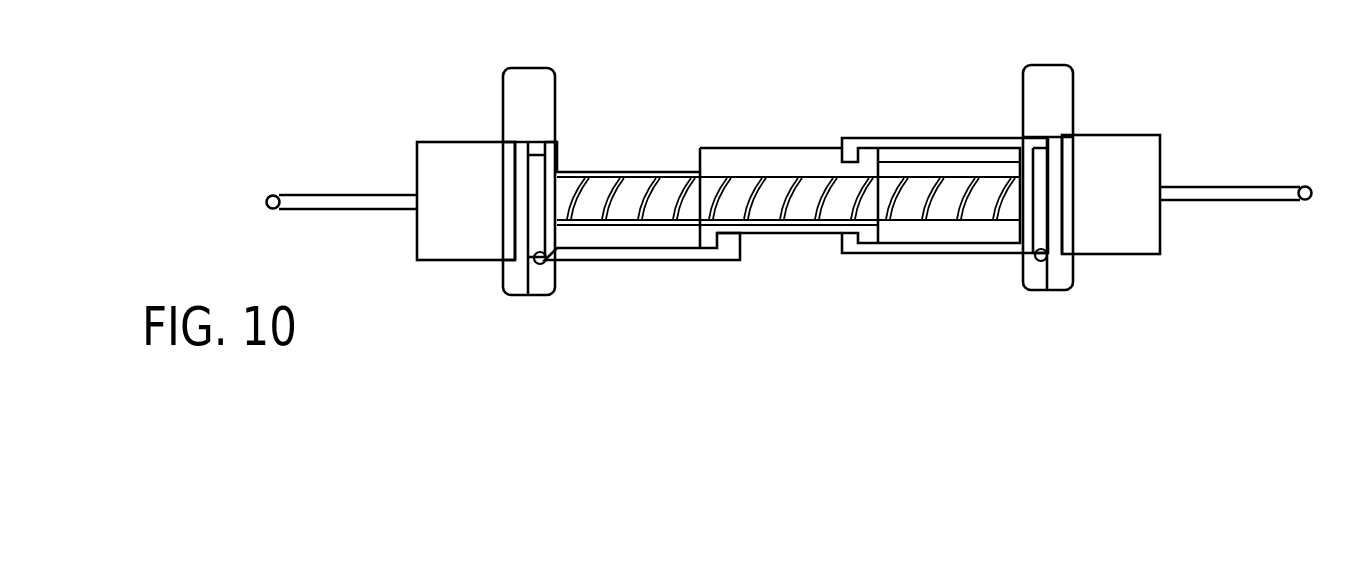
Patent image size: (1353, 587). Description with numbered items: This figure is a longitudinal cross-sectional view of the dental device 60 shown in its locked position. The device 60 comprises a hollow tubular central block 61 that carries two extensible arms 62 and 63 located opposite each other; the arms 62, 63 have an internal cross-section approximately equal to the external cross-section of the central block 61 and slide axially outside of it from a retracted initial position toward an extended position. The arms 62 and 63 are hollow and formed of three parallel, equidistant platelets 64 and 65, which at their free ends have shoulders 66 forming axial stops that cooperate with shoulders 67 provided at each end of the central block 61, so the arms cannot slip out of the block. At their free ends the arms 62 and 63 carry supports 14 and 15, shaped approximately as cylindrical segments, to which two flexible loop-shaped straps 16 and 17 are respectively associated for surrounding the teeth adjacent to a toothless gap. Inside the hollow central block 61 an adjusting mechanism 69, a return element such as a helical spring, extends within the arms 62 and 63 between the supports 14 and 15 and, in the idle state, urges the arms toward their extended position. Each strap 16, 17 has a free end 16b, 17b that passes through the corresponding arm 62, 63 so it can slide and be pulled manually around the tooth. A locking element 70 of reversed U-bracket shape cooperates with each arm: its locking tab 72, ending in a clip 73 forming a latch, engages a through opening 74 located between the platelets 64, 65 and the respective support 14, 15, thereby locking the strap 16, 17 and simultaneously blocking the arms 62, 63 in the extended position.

The support 14 is at (417, 154).
The support 15 is at (1132, 135).
The loop-shaped strap 16 is at (318, 197).
The free end of strap 16b is at (545, 255).
The loop-shaped strap 17 is at (1293, 187).
The free end of strap 17b is at (1045, 248).
The dental device 60 is at (796, 213).
The central block 61 is at (787, 243).
The extensible arm 62 is at (593, 273).
The extensible arm 63 is at (975, 268).
The platelet 64 is at (668, 262).
The platelet 65 is at (938, 260).
The shoulder 66 is at (868, 240).
The shoulder 67 is at (857, 238).
The adjusting mechanism 69 is at (605, 218).
The locking element 70 is at (518, 90).
The locking tab 72 is at (433, 242).
The clip 73 is at (520, 293).
The through opening 74 is at (1043, 173).